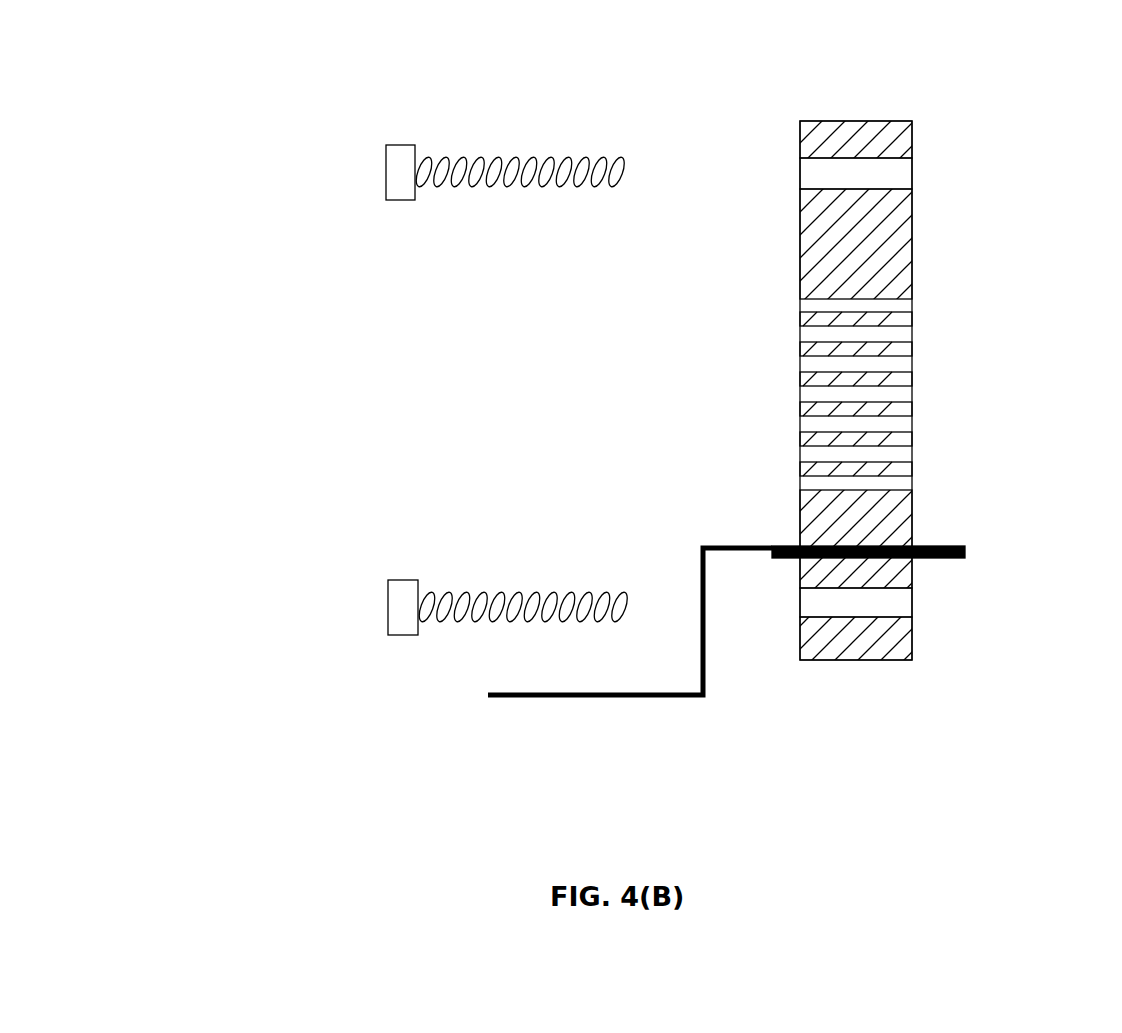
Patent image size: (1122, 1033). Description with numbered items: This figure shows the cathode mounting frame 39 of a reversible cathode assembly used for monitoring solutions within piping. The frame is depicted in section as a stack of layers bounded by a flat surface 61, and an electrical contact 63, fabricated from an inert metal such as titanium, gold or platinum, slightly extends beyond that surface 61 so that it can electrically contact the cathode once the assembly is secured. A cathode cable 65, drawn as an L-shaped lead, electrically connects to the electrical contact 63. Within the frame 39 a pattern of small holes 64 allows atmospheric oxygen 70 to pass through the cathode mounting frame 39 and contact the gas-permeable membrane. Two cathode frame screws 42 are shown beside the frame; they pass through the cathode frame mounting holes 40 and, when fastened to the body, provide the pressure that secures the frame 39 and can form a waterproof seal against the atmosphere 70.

The cathode mounting frame 39 is at (838, 120).
The cathode frame mounting holes 40 is at (893, 172).
The cathode frame screws 42 is at (386, 165).
The surface 61 is at (912, 250).
The electrical contact 63 is at (948, 557).
The small holes 64 is at (820, 340).
The cathode cable 65 is at (517, 698).
The atmospheric oxygen 70 is at (192, 391).